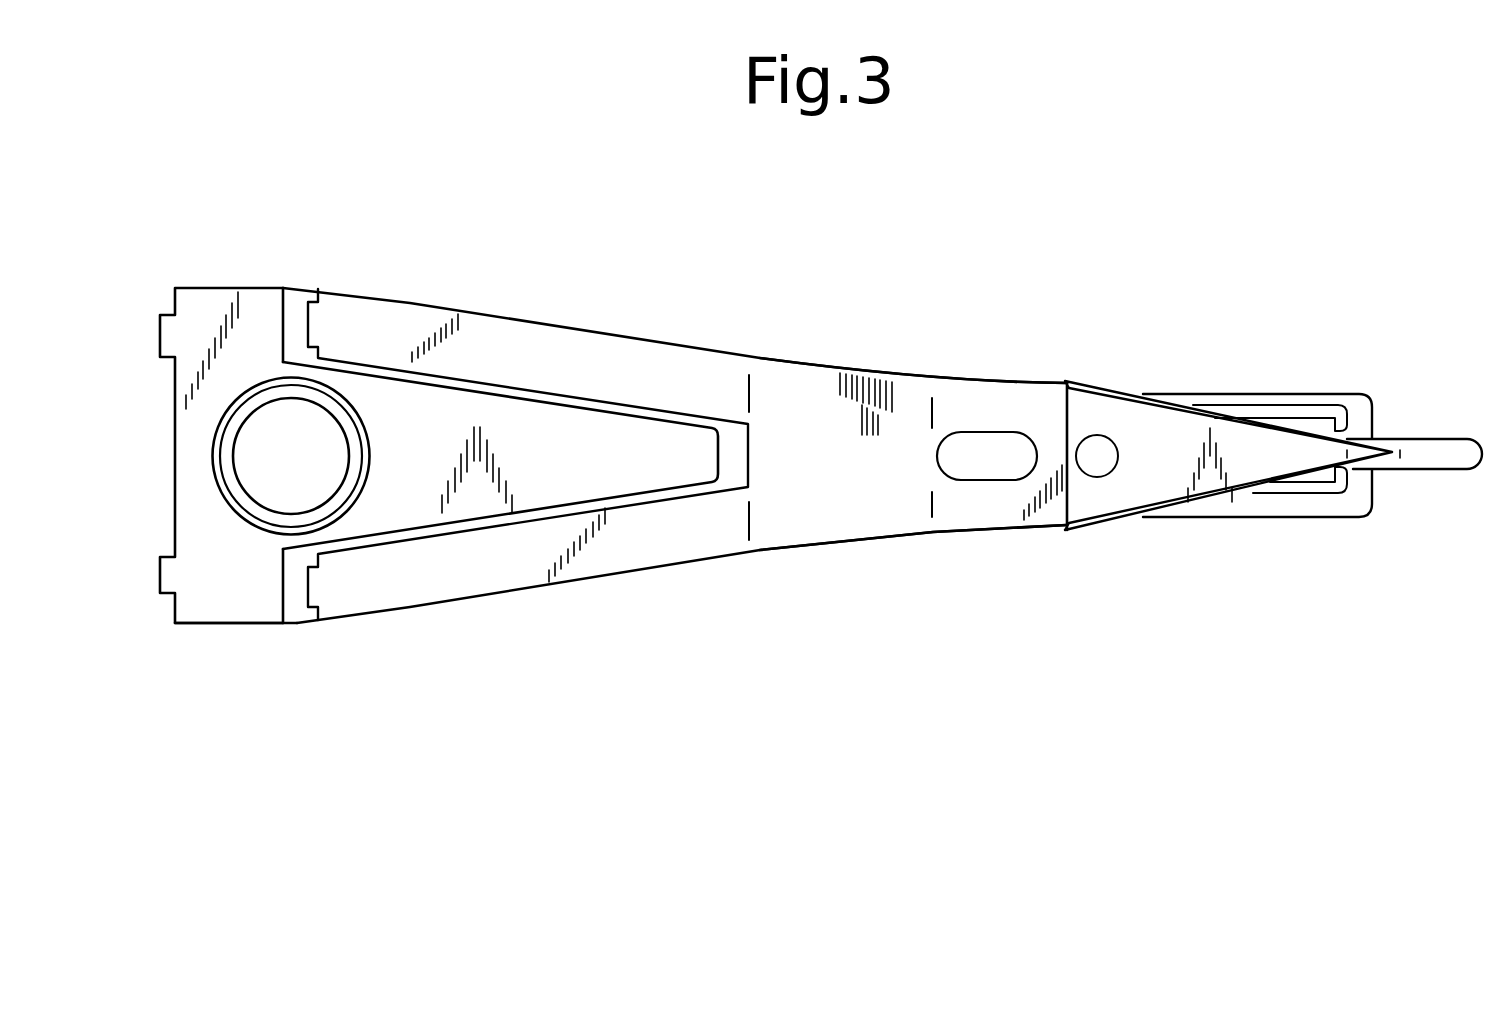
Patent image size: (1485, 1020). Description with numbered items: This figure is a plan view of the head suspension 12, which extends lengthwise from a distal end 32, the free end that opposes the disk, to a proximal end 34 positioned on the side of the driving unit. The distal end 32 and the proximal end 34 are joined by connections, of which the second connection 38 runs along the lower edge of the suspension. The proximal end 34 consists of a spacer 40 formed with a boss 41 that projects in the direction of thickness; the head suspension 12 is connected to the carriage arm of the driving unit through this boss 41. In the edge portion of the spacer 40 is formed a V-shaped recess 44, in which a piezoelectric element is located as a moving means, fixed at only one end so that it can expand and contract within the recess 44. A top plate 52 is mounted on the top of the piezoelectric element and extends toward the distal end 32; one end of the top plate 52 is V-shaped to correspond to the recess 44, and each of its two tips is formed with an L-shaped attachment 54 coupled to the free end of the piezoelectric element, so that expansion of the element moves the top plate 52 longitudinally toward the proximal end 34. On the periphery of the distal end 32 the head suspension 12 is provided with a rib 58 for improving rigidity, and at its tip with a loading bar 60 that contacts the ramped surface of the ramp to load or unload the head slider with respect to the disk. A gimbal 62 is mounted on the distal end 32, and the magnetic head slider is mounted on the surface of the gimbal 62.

The head suspension 12 is at (820, 284).
The distal end 32 is at (1197, 385).
The proximal end 34 is at (260, 283).
The second connection 38 is at (858, 514).
The spacer 40 is at (212, 603).
The boss 41 is at (262, 535).
The V-shaped recess 44 is at (298, 288).
The top plate 52 is at (813, 393).
The L-shaped attachment 54 is at (318, 322).
The rib 58 is at (1087, 383).
The loading bar 60 is at (1446, 452).
The gimbal 62 is at (1362, 395).